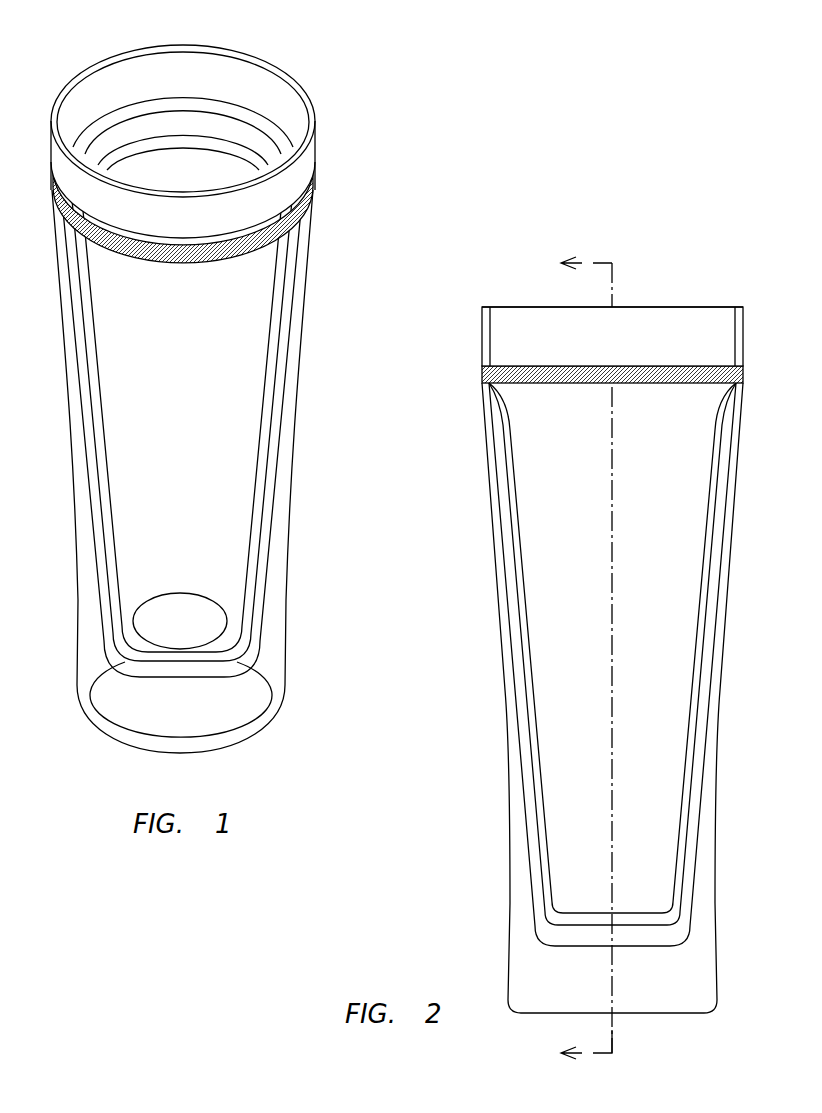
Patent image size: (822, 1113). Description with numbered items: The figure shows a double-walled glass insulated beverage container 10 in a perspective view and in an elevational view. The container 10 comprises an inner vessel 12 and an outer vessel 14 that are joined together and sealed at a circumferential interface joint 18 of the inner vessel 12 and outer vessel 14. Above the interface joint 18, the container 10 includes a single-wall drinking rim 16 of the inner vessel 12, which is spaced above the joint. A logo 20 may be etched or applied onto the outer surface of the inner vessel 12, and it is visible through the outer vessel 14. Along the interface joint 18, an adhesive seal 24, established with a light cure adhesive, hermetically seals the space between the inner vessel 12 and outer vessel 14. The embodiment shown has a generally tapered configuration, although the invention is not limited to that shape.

In FIG. 1, the double-walled glass insulated beverage container 10 is at (220, 387).
In FIG. 2, the double-walled glass insulated beverage container 10 is at (598, 642).
In FIG. 1, the inner vessel 12 is at (102, 507).
In FIG. 2, the inner vessel 12 is at (535, 771).
In FIG. 1, the outer vessel 14 is at (288, 465).
In FIG. 2, the outer vessel 14 is at (710, 860).
In FIG. 1, the drinking rim 16 is at (269, 63).
In FIG. 2, the drinking rim 16 is at (741, 306).
In FIG. 1, the circumferential interface joint 18 is at (316, 184).
In FIG. 2, the circumferential interface joint 18 is at (481, 376).
In FIG. 1, the logo 20 is at (127, 366).
In FIG. 2, the logo 20 is at (580, 541).
In FIG. 1, the adhesive seal 24 is at (200, 266).
In FIG. 2, the adhesive seal 24 is at (677, 381).